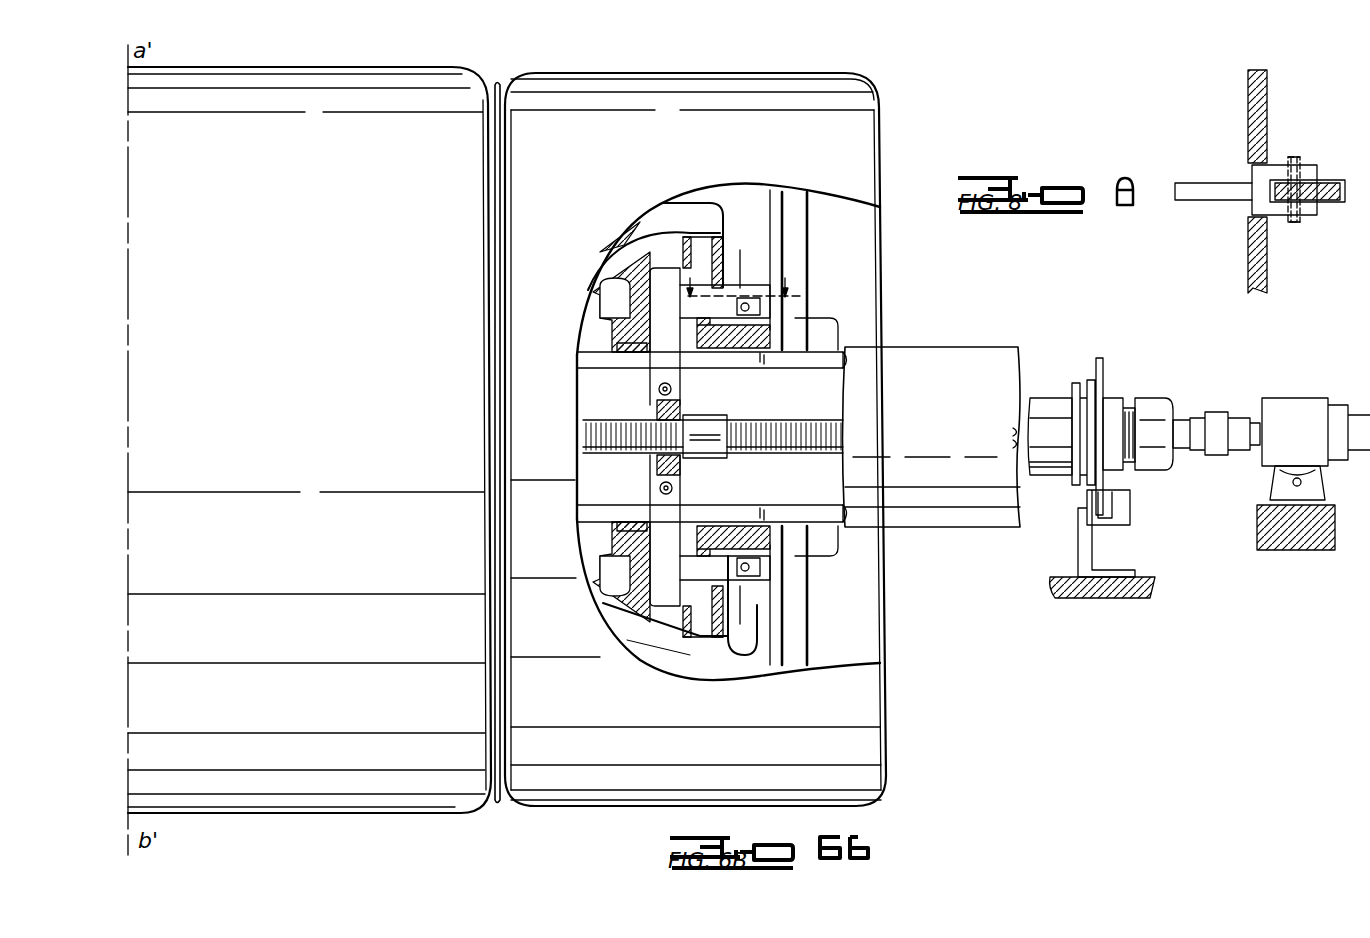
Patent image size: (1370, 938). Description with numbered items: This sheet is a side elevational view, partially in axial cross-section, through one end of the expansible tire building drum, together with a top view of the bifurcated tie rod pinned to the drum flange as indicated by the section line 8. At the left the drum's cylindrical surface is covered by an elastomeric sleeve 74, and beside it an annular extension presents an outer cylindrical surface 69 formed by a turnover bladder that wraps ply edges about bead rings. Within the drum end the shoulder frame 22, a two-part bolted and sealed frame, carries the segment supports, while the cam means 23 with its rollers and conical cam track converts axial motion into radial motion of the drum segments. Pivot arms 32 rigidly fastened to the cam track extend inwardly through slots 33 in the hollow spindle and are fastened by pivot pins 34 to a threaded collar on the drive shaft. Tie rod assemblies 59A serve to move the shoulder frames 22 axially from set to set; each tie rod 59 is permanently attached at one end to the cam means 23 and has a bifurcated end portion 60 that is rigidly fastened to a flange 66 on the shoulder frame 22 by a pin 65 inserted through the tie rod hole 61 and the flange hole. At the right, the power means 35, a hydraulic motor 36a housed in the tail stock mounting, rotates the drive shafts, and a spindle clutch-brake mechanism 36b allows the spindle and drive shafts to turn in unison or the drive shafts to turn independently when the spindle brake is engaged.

In FIG. 6B, the elastomeric sleeve 74 is at (345, 70).
In FIG. 6B, the outer cylindrical surface 69 is at (765, 72).
In FIG. 6B, the cam means 23 is at (610, 312).
In FIG. 6B, the shoulder frame 22 is at (725, 648).
In FIG. 6B, the tie rod 59 is at (596, 292).
In FIG. 8, the tie rod 59 is at (1210, 190).
In FIG. 6B, the tie rod assembly 59A is at (748, 243).
In FIG. 6B, the bifurcated end portion 60 is at (760, 305).
In FIG. 8, the bifurcated end portion 60 is at (1305, 172).
In FIG. 6B, the tie rod hole 61 is at (750, 300).
In FIG. 6B, the pin 65 is at (808, 325).
In FIG. 8, the pin 65 is at (1290, 158).
In FIG. 6B, the flange 66 is at (782, 295).
In FIG. 6B, the section line 8- 8 is at (744, 269).
In FIG. 6B, the pivot arm 32 is at (672, 373).
In FIG. 6B, the slot 33 is at (752, 355).
In FIG. 6B, the pivot pin 34 is at (659, 392).
In FIG. 6B, the power means 35 is at (1325, 398).
In FIG. 6B, the hydraulic motor 36a is at (1277, 405).
In FIG. 6B, the spindle clutch-brake mechanism 36b is at (1138, 410).